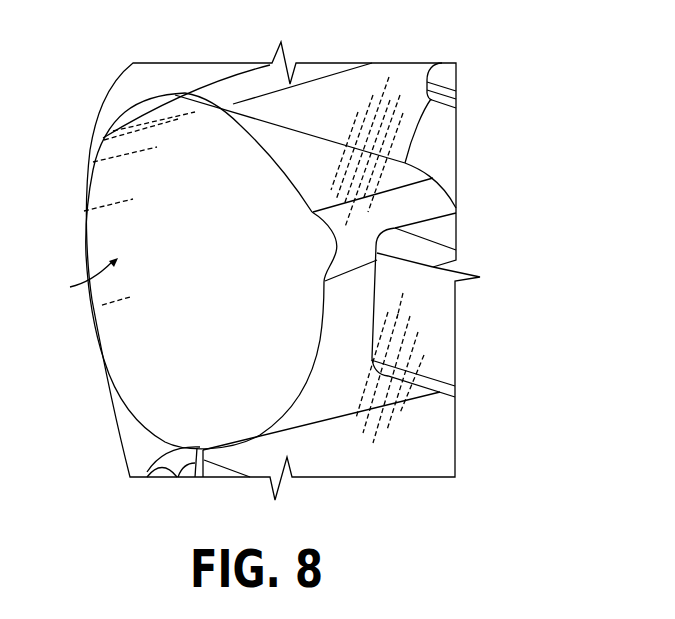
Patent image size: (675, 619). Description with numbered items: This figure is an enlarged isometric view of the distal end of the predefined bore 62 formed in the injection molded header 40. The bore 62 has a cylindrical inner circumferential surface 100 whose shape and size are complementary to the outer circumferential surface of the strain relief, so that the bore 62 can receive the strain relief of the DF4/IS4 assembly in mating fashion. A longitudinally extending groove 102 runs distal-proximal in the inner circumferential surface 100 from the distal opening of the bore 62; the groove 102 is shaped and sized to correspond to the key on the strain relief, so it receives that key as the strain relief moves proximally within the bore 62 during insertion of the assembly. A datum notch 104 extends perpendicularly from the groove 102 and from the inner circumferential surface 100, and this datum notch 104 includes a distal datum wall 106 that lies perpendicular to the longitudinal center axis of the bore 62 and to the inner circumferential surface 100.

The injection molded header 40 is at (113, 101).
The predefined bore 62 is at (80, 279).
The cylindrical inner circumferential surface 100 is at (100, 220).
The longitudinally extending groove 102 is at (328, 243).
The datum notch 104 is at (449, 227).
The distal datum wall 106 is at (440, 316).